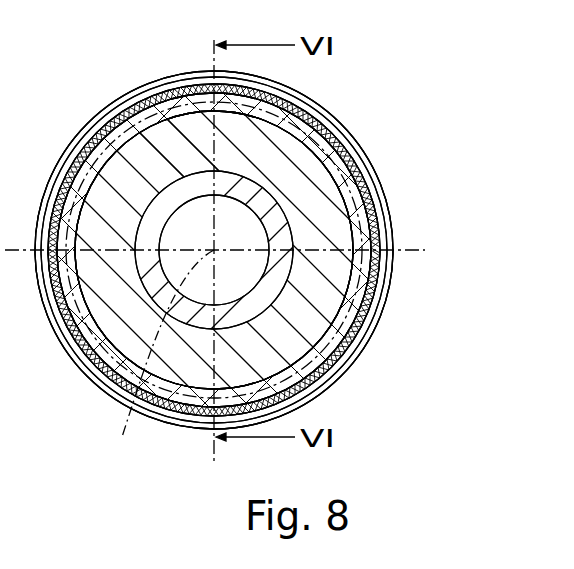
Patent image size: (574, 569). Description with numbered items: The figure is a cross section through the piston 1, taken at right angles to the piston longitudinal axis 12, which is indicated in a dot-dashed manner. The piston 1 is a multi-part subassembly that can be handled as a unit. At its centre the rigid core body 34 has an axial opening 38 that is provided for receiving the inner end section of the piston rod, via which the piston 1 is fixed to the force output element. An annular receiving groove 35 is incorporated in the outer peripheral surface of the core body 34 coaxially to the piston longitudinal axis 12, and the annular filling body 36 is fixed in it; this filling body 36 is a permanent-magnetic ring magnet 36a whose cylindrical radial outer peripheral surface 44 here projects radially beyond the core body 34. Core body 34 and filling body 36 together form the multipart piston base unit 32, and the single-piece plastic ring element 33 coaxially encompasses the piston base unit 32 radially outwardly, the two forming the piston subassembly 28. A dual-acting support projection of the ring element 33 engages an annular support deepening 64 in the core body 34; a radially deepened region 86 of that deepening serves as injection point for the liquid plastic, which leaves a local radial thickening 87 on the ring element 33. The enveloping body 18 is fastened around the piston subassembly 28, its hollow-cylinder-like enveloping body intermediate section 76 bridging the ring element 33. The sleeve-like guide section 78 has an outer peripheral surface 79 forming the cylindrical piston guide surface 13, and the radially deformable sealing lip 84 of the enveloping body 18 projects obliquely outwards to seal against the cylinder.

The piston 1 is at (350, 107).
The piston longitudinal axis 12 is at (157, 360).
The cylindrical piston guide surface 13 is at (149, 93).
The enveloping body 18 is at (78, 362).
The piston subassembly 28 is at (166, 392).
The piston base unit 32 is at (332, 203).
The ring element 33 is at (360, 222).
The core body 34 is at (283, 275).
The annular receiving groove 35 is at (180, 182).
The filling body 36 is at (297, 352).
The ring magnet 36a is at (297, 352).
The axial opening 38 is at (247, 280).
The radial outer peripheral surface 44 is at (328, 160).
The annular support deepening 64 is at (307, 138).
The enveloping body intermediate section 76 is at (137, 108).
The guide section 78 is at (295, 105).
The outer peripheral surface 79 is at (150, 80).
The sealing lip 84 is at (108, 110).
The radially deepened region 86 is at (180, 126).
The local radial thickening 87 is at (187, 77).